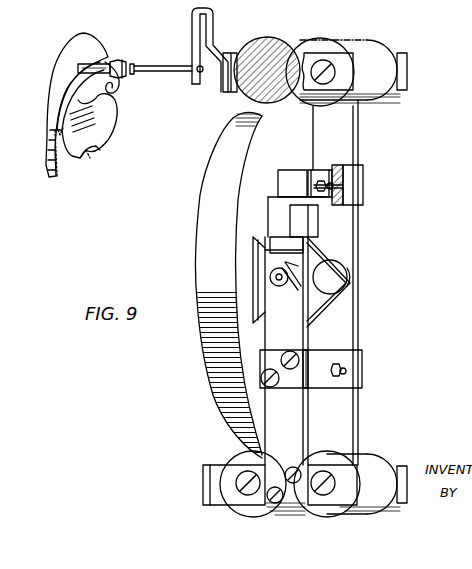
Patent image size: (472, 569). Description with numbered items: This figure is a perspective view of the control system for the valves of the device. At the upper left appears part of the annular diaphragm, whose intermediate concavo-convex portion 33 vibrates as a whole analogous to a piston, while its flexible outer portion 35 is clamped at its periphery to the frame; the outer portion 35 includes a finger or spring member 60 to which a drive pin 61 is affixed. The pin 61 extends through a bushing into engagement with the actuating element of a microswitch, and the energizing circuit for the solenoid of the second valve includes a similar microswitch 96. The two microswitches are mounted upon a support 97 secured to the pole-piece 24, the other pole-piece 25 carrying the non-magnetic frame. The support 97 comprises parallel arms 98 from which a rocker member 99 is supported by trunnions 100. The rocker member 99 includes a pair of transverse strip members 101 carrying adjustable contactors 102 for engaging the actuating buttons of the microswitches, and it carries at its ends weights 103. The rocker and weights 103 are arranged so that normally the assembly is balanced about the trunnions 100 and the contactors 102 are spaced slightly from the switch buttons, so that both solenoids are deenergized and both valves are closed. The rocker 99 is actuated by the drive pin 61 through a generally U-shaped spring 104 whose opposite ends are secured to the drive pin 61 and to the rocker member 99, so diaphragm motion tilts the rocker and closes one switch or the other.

The pole-piece 24 is at (210, 347).
The pole-piece 25 is at (270, 4).
The intermediate concavo-convex portion 33 is at (92, 142).
The outer portion 35 is at (93, 46).
The finger or spring member 60 is at (70, 78).
The drive pin 61 is at (162, 72).
The microswitch 96 is at (290, 176).
The support 97 is at (292, 242).
The parallel arms 98 is at (255, 266).
The rocker member 99 is at (343, 126).
The trunnions 100 is at (350, 272).
The transverse strip members 101 is at (361, 197).
The adjustable contactors 102 is at (345, 186).
The weights 103 is at (300, 46).
The U-shaped spring 104 is at (214, 20).